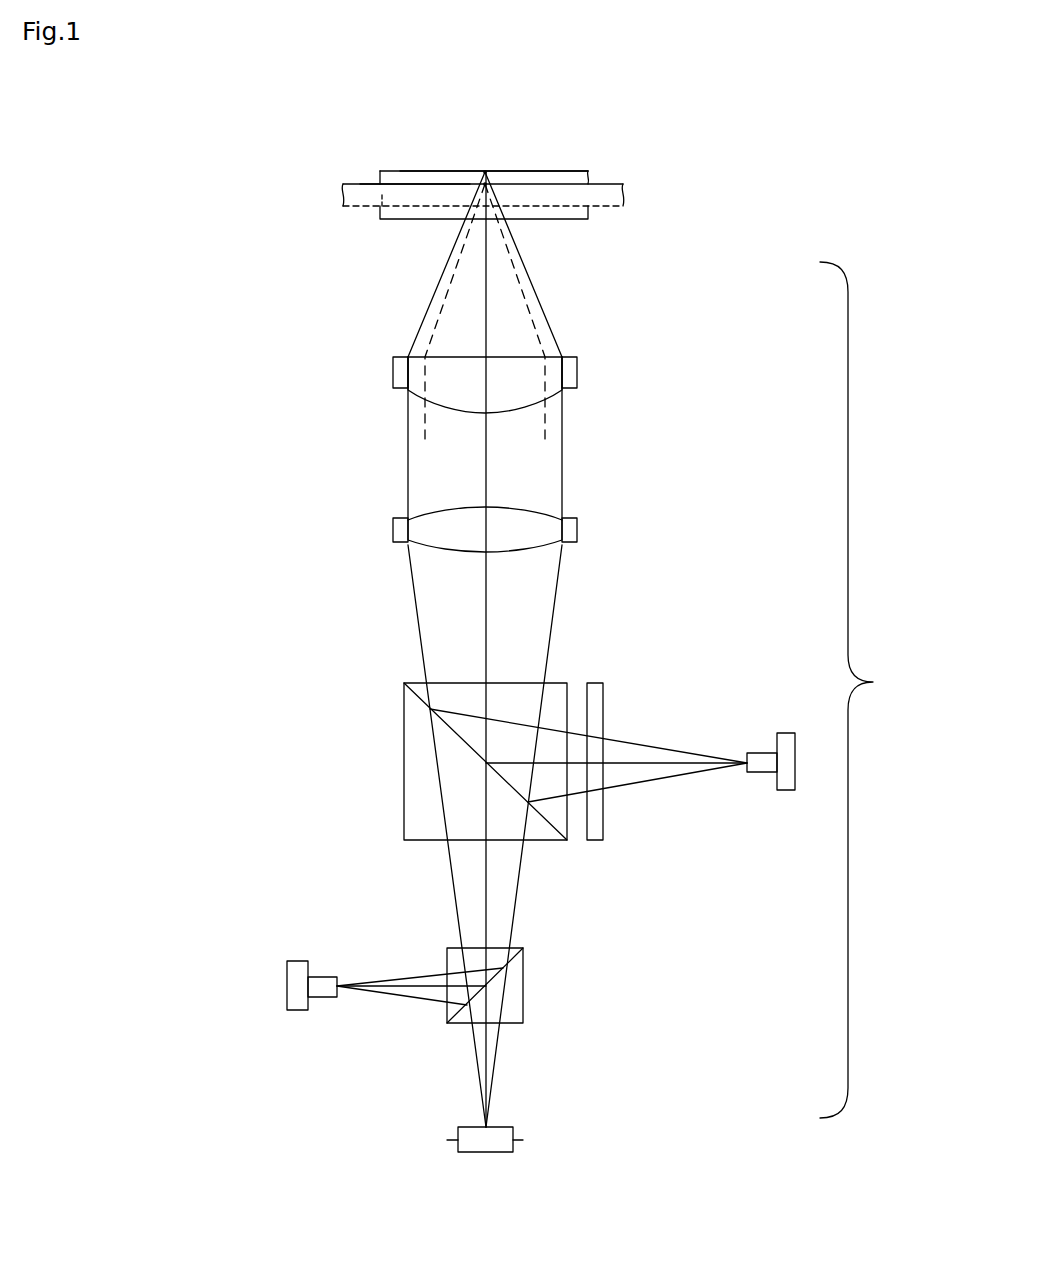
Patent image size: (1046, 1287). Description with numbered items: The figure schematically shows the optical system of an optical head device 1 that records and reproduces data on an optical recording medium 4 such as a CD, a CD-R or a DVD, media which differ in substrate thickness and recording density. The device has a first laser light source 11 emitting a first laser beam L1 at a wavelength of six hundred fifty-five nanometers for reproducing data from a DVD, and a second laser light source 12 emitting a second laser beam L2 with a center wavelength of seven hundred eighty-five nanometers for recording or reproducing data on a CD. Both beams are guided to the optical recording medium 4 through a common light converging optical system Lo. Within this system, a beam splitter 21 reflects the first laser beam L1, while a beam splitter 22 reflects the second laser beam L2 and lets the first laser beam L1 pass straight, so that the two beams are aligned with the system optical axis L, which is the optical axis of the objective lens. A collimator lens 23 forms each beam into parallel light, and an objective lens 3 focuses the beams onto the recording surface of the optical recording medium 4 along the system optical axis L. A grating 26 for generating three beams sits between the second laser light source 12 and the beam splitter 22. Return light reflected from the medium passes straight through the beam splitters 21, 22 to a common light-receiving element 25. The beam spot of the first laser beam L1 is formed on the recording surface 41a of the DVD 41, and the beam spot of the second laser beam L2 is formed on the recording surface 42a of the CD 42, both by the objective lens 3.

The optical head device 1 is at (283, 452).
The objective lens 3 is at (580, 372).
The optical recording medium 4 is at (818, 148).
The first laser light source 11 is at (287, 985).
The second laser light source 12 is at (787, 740).
The beam splitter 21 is at (527, 967).
The beam splitter 22 is at (553, 683).
The collimator lens 23 is at (580, 528).
The light-receiving element 25 is at (503, 1135).
The grating 26 is at (607, 813).
The DVD 41 is at (597, 196).
The recording surface 41a is at (417, 183).
The CD 42 is at (592, 171).
The recording surface 42a is at (548, 171).
The system optical axis L is at (485, 613).
The first laser beam L1 is at (393, 978).
The second laser beam L2 is at (663, 762).
The light converging optical system Lo is at (867, 690).